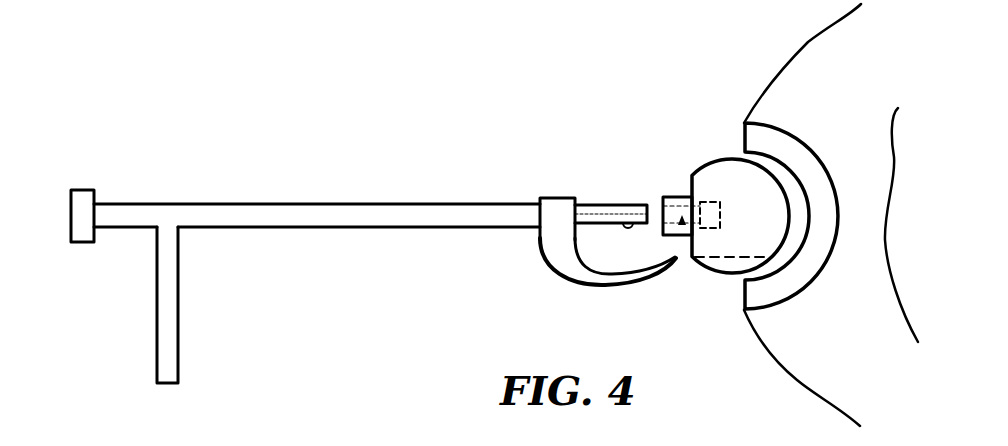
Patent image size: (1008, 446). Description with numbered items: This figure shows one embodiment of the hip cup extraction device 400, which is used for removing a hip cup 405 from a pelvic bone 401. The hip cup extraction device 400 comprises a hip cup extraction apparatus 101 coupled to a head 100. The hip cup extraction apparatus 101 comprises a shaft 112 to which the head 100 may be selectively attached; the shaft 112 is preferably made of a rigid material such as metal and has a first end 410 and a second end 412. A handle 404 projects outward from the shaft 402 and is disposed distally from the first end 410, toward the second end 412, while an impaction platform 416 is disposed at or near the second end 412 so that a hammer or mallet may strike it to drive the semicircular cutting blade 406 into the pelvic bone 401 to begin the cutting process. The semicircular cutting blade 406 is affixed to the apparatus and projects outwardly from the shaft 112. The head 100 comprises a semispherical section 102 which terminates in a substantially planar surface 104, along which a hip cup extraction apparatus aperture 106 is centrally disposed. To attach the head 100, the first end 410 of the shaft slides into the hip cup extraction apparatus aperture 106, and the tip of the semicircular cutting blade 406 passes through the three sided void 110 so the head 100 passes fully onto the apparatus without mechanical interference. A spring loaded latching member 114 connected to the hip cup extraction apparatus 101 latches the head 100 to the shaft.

The hip cup extraction device 400 is at (508, 118).
The pelvic bone 401 is at (808, 67).
The shaft 402 is at (550, 245).
The handle 404 is at (168, 347).
The hip cup 405 is at (760, 295).
The semicircular cutting blade 406 is at (563, 260).
The first end 410 is at (645, 203).
The second end 412 is at (67, 217).
The impaction platform 416 is at (83, 205).
The hip cup extraction apparatus 101 is at (342, 205).
The shaft 112 is at (270, 220).
The spring loaded latching member 114 is at (628, 240).
The head 100 is at (712, 177).
The semispherical section 102 is at (733, 157).
The substantially planar surface 104 is at (680, 236).
The hip cup extraction apparatus aperture 106 is at (688, 247).
The three sided void 110 is at (713, 233).